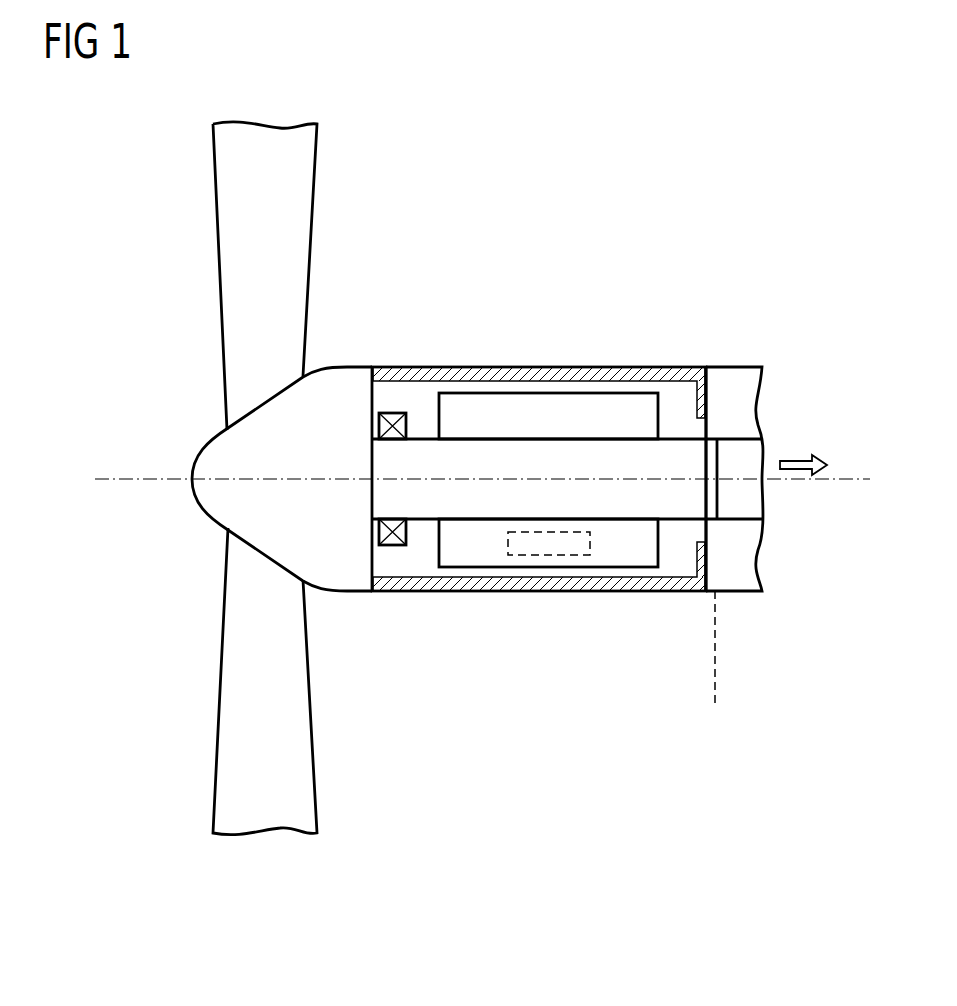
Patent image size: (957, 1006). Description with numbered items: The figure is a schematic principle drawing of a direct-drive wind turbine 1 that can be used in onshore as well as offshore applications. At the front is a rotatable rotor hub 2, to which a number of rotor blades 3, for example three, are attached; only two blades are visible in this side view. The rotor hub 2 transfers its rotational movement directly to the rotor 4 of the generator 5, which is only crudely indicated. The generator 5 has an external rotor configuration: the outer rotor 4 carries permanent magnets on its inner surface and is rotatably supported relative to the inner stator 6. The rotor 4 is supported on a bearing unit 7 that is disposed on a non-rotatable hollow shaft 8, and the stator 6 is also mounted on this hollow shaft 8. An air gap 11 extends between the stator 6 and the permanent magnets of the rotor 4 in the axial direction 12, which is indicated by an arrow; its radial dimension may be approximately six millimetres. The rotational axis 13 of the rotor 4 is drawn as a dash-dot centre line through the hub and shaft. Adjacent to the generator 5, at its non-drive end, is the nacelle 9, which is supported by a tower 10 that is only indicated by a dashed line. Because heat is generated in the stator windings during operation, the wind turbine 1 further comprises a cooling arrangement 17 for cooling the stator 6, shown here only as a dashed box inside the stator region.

The wind turbine 1 is at (665, 222).
The rotor hub 2 is at (200, 508).
The rotor blades 3 is at (215, 222).
The rotor 4 is at (489, 380).
The generator 5 is at (570, 323).
The stator 6 is at (456, 398).
The bearing unit 7 is at (393, 412).
The hollow shaft 8 is at (525, 440).
The nacelle 9 is at (730, 367).
The tower 10 is at (715, 648).
The air gap 11 is at (633, 367).
The axial direction 12 is at (802, 460).
The rotational axis 13 is at (146, 478).
The cooling arrangement 17 is at (550, 545).